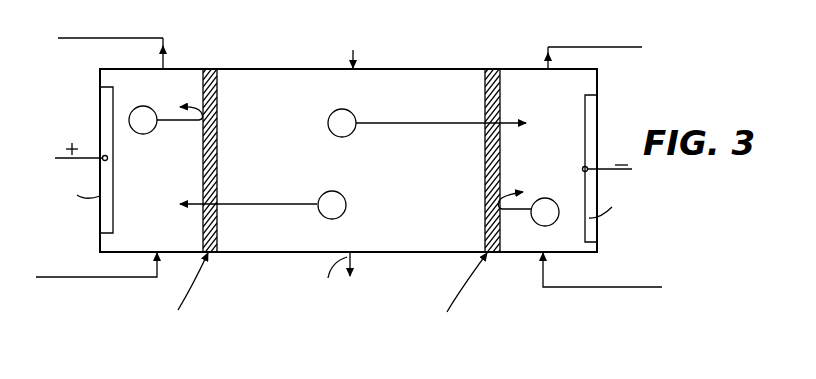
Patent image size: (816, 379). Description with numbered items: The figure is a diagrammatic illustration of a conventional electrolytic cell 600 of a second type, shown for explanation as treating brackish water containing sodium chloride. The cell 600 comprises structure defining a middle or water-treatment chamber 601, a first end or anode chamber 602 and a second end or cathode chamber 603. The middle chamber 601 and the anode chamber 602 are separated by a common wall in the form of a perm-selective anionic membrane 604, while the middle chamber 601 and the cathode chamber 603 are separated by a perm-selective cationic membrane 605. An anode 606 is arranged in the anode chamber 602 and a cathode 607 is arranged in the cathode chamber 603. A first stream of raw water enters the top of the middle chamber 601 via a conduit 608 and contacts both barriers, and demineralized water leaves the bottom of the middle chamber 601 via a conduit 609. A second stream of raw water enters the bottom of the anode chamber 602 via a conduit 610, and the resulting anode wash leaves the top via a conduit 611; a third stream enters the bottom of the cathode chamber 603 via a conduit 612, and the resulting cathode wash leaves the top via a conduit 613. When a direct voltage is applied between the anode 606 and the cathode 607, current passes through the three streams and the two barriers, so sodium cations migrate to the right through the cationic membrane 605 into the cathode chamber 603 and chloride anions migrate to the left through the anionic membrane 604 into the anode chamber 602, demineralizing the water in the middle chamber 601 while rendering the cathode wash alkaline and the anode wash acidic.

The electrolytic cell 600 is at (271, 53).
The middle or water-treatment chamber 601 is at (419, 173).
The anode chamber 602 is at (165, 173).
The cathode chamber 603 is at (562, 164).
The perm-selective (anionic) membrane 604 is at (207, 175).
The perm-selective (cationic) membrane 605 is at (485, 212).
The anode 606 is at (101, 113).
The cathode 607 is at (593, 127).
The conduit 608 is at (355, 56).
The conduit 609 is at (352, 258).
The conduit 610 is at (150, 283).
The conduit 611 is at (163, 38).
The conduit 612 is at (543, 286).
The conduit 613 is at (548, 47).